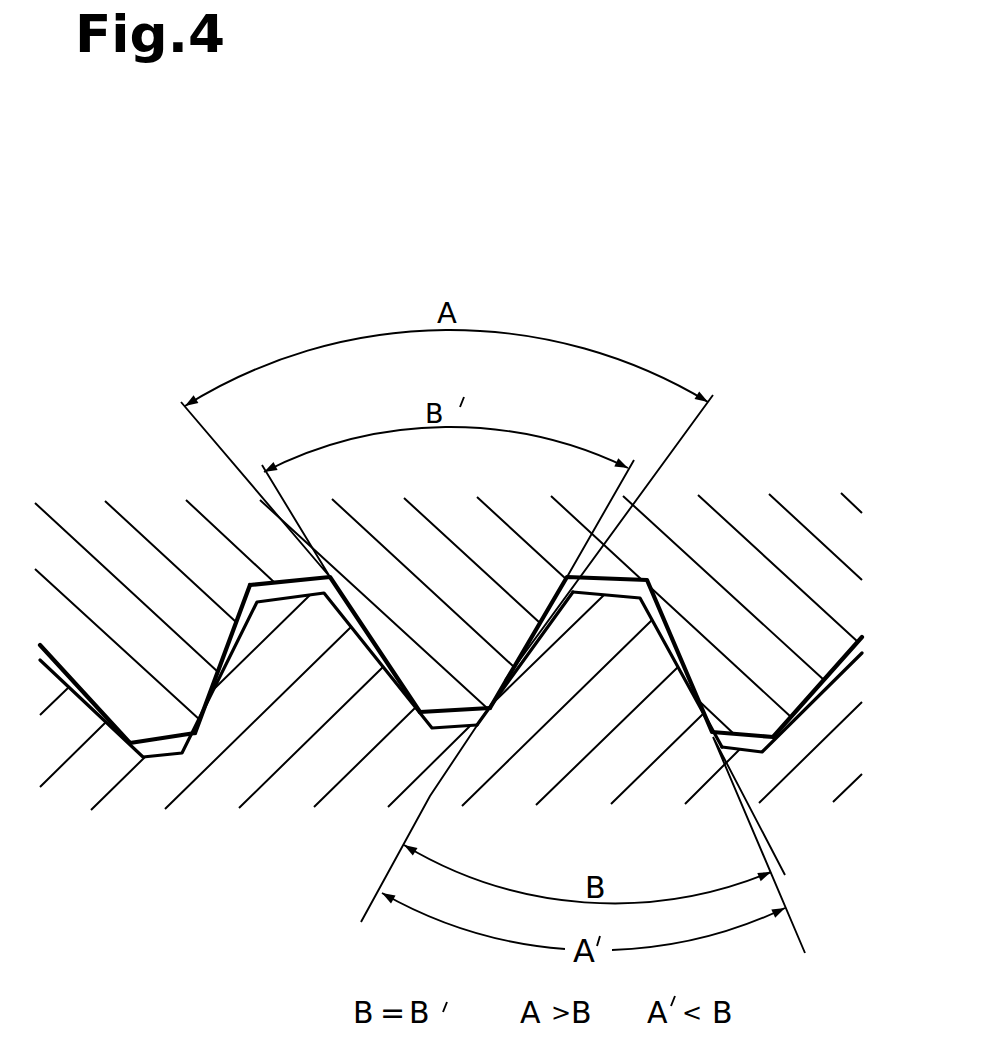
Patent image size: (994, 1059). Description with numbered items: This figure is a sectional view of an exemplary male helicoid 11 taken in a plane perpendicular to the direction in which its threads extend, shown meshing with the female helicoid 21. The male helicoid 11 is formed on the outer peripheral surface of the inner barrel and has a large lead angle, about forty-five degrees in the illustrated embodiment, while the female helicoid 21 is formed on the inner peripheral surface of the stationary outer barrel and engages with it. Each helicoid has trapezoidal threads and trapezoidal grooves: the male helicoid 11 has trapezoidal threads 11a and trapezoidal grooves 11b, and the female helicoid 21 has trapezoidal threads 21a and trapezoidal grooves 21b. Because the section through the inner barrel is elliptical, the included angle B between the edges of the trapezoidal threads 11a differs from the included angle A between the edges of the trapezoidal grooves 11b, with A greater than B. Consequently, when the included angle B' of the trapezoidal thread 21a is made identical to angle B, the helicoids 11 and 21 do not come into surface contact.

The male helicoid 11 is at (333, 833).
The female helicoid 21 is at (750, 471).
The trapezoidal thread 11a is at (623, 613).
The trapezoidal groove 11b is at (533, 640).
The trapezoidal thread 21a is at (480, 677).
The trapezoidal groove 21b is at (238, 624).